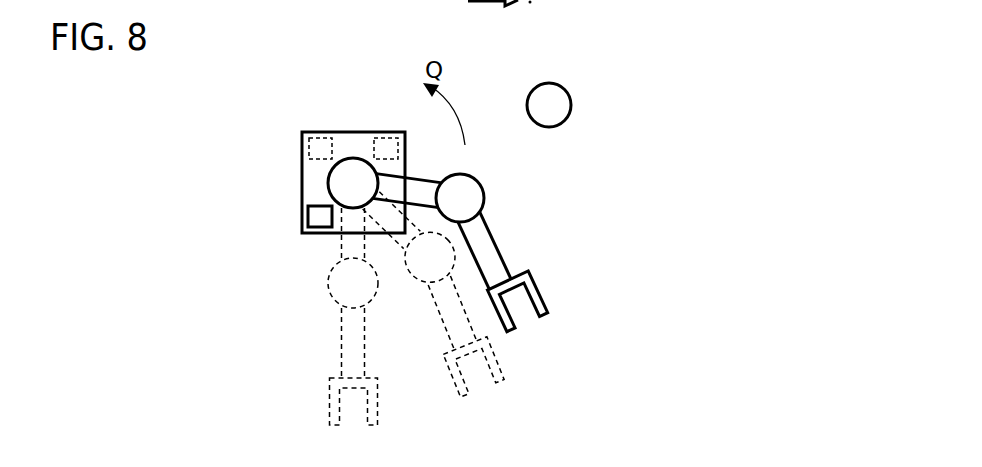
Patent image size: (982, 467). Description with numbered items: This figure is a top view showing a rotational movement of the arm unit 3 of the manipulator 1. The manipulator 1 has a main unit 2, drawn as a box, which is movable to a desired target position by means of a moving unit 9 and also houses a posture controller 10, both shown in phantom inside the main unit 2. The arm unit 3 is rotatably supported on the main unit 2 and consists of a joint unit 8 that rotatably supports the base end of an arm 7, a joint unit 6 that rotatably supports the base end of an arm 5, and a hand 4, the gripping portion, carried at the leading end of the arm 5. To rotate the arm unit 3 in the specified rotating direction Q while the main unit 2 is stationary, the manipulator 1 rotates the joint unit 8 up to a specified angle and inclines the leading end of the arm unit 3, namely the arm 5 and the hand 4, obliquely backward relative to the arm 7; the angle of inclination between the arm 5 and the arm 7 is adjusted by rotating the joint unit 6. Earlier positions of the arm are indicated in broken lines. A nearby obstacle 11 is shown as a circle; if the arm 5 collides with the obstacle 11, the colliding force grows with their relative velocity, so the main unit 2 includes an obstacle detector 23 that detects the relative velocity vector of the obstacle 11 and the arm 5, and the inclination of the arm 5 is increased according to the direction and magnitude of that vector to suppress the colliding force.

The manipulator 1 is at (421, 251).
The main unit 2 is at (325, 186).
The arm unit 3 is at (478, 233).
The hand 4 is at (532, 292).
The arm 5 is at (490, 248).
The joint unit 6 is at (475, 200).
The arm 7 is at (415, 188).
The joint unit 8 is at (370, 176).
The moving unit 9 is at (386, 130).
The posture controller 10 is at (318, 130).
The obstacle 11 is at (571, 102).
The obstacle detector 23 is at (322, 227).